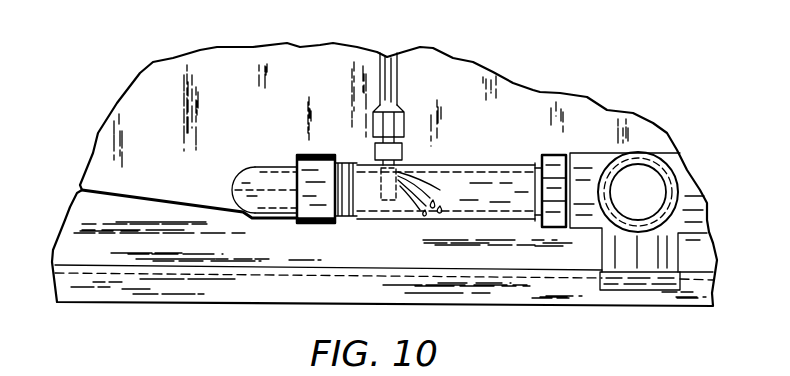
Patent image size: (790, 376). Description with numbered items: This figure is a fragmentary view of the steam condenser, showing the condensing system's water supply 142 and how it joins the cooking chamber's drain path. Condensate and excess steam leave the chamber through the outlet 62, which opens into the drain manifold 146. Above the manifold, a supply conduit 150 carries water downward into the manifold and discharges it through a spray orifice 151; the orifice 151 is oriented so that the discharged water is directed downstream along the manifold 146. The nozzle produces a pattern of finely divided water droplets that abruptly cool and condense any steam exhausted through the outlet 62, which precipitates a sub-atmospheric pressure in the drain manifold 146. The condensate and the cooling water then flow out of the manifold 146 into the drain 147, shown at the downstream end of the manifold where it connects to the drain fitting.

The water supply 142 is at (343, 113).
The outlet 62 is at (252, 188).
The supply conduit 150 is at (388, 87).
The drain manifold 146 is at (480, 187).
The spray orifice 151 is at (386, 166).
The drain 147 is at (655, 273).